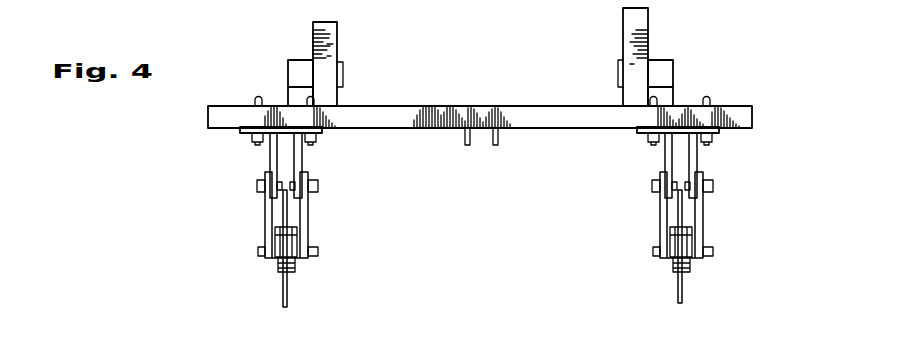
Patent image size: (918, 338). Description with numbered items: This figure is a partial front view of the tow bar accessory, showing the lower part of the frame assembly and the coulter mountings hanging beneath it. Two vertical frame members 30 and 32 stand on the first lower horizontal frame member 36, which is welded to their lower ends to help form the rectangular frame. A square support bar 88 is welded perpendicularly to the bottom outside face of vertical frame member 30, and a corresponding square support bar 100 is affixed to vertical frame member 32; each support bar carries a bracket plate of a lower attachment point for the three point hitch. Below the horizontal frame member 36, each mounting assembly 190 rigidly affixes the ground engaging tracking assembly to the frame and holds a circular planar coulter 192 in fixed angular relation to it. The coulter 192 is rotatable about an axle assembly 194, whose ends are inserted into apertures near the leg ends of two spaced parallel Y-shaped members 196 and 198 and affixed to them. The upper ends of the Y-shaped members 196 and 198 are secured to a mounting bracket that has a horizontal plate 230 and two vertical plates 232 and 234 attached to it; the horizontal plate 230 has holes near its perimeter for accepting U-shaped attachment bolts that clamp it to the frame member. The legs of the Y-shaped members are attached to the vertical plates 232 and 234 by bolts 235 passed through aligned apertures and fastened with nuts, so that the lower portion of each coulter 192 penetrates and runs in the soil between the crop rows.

The vertical frame member 30 is at (637, 20).
The vertical frame member 32 is at (332, 27).
The first lower horizontal frame member 36 is at (580, 112).
The square support bar 88 is at (657, 62).
The square support bar 100 is at (307, 65).
The mounting assembly 190 is at (190, 142).
The coulter 192 is at (287, 305).
The axle assembly 194 is at (318, 252).
The Y-shaped member 196 is at (262, 225).
The Y-shaped member 198 is at (310, 218).
The horizontal plate 230 is at (240, 133).
The vertical plate 232 is at (270, 155).
The vertical plate 234 is at (300, 156).
The bolt 235 is at (258, 184).